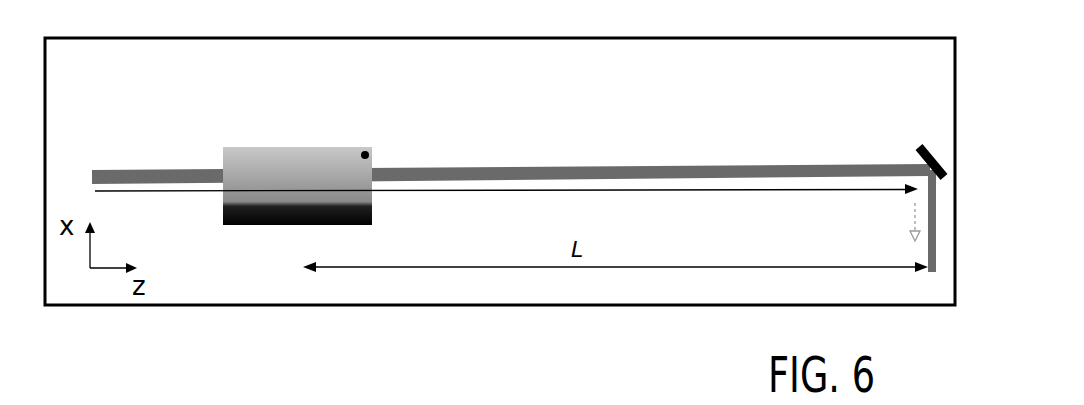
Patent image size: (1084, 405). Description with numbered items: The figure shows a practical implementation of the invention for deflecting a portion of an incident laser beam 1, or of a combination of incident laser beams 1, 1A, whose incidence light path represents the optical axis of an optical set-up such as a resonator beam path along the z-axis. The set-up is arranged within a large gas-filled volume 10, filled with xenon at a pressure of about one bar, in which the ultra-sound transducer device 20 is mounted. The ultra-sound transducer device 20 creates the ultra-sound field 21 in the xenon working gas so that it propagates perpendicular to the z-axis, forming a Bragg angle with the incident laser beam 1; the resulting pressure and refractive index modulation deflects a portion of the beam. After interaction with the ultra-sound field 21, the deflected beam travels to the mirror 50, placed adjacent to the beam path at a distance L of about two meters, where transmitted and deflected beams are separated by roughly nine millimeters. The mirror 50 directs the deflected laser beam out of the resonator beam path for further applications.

The gas-filled volume 10 is at (928, 86).
The incident laser beam 1 is at (498, 197).
The incident laser beam 1A is at (176, 180).
The ultra-sound transducer device 20 is at (409, 237).
The ultra-sound field 21 is at (368, 153).
The mirror 50 is at (918, 148).